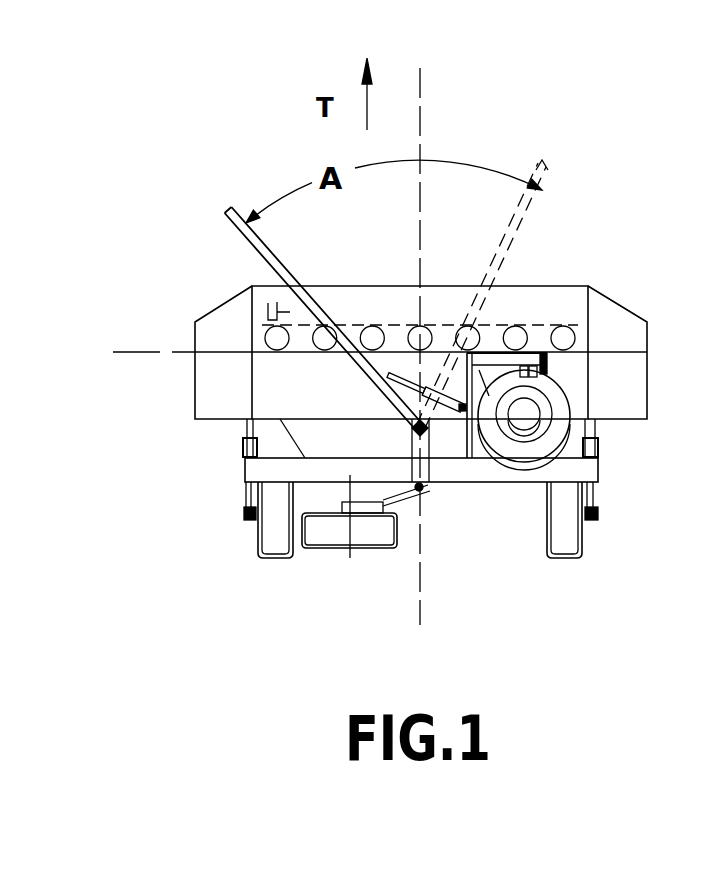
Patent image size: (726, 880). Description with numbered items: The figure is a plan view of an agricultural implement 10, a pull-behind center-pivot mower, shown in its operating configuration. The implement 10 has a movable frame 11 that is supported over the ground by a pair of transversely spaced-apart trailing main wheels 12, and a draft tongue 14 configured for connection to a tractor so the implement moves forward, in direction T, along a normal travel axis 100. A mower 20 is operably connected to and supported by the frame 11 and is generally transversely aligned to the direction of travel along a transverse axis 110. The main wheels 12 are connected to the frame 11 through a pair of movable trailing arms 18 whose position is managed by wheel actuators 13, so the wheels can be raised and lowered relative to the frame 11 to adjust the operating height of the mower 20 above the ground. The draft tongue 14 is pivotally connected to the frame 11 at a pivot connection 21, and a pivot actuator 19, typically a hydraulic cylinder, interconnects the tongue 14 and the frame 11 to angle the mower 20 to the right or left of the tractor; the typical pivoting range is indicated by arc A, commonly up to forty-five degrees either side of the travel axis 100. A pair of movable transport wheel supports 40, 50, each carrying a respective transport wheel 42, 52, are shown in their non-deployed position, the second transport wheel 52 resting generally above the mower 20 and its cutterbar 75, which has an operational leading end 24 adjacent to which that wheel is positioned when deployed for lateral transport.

The agricultural implement 10 is at (582, 192).
The movable frame 11 is at (575, 473).
The trailing main wheels 12 is at (275, 552).
The wheel actuators 13 is at (248, 494).
The draft tongue 14 is at (243, 238).
The trailing arms 18 is at (247, 521).
The pivot actuator 19 is at (385, 370).
The mower 20 is at (268, 303).
The pivot connection 21 is at (443, 443).
The operational leading end 24 is at (500, 323).
The transport wheel support 40 is at (405, 545).
The transport wheel 42 is at (331, 549).
The transport wheel support 50 is at (563, 368).
The transport wheel 52 is at (562, 400).
The cutterbar 75 is at (567, 323).
The travel axis 100 is at (420, 110).
The transverse axis 110 is at (152, 350).